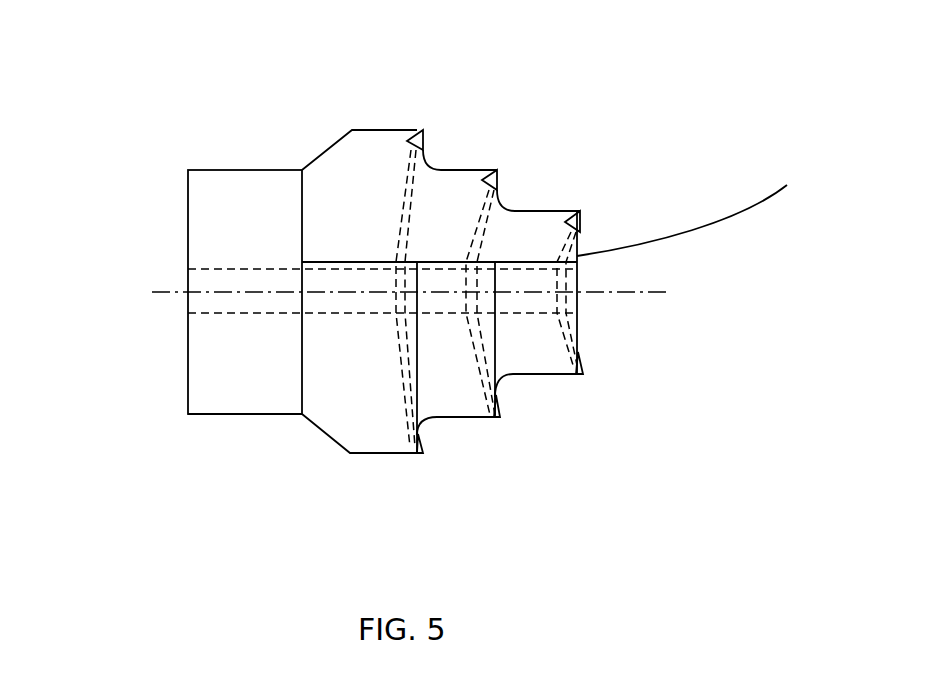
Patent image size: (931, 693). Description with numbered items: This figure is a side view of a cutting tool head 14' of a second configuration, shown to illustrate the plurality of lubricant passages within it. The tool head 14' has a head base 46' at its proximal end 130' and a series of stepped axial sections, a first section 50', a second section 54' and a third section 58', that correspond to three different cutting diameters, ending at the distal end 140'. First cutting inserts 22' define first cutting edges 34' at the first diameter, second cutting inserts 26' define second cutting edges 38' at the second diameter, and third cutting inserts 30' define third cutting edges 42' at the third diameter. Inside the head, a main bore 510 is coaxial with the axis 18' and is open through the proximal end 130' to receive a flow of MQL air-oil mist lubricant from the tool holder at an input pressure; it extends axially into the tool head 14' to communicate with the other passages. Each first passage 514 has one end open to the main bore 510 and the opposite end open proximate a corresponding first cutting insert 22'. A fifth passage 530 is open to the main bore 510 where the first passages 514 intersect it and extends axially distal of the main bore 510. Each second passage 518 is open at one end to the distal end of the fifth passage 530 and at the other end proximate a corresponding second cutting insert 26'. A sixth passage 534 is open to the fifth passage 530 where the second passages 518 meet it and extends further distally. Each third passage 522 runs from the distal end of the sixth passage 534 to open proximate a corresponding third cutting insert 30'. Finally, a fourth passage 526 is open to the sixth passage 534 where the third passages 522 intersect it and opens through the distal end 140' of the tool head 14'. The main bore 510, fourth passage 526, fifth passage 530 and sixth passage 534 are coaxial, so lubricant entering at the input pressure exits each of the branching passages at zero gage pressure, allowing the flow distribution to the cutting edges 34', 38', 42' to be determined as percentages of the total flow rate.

The proximal end 130' is at (182, 281).
The head base 46' is at (224, 437).
The tool head 14' is at (336, 452).
The first section 50' is at (356, 125).
The main bore 510 is at (235, 268).
The axis 18' is at (442, 328).
The first cutting inserts 22' is at (453, 276).
The first cutting edges 34' is at (466, 294).
The second section 54' is at (458, 147).
The second cutting inserts 26' is at (541, 251).
The second cutting edges 38' is at (548, 285).
The third cutting inserts 30' is at (625, 260).
The third cutting edges 42' is at (487, 287).
The third section 58' is at (613, 221).
The distal end 140' is at (697, 207).
The fourth passage 526 is at (577, 278).
The third passages 522 is at (577, 240).
The first passages 514 is at (402, 255).
The second passages 518 is at (495, 228).
The fifth passage 530 is at (465, 262).
The sixth passage 534 is at (495, 313).